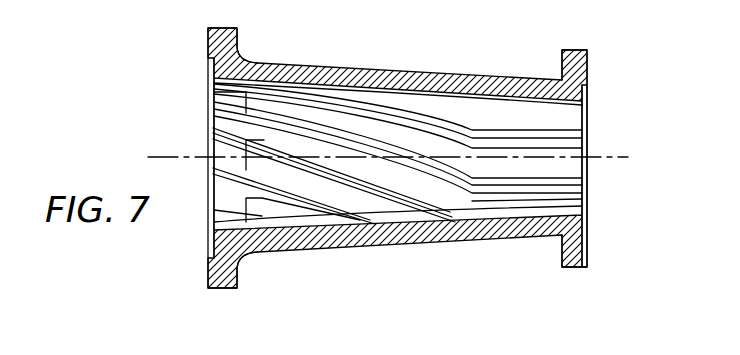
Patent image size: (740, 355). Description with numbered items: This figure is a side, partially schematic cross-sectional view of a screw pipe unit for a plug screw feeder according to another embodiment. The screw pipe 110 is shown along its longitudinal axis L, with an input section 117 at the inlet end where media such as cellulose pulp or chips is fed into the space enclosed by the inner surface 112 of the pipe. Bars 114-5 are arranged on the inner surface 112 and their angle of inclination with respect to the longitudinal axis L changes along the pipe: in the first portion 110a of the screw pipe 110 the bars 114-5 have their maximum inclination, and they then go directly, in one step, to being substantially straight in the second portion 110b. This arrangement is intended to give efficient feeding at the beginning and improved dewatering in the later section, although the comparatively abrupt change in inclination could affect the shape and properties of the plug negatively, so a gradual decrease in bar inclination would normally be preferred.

The screw pipe 110 is at (438, 38).
The first portion of screw pipe 110a is at (306, 60).
The second portion of screw pipe 110b is at (526, 66).
The inner surface 112 is at (290, 178).
The bars 114-5 is at (370, 145).
The input section 117 is at (224, 125).
The longitudinal axis L is at (396, 158).